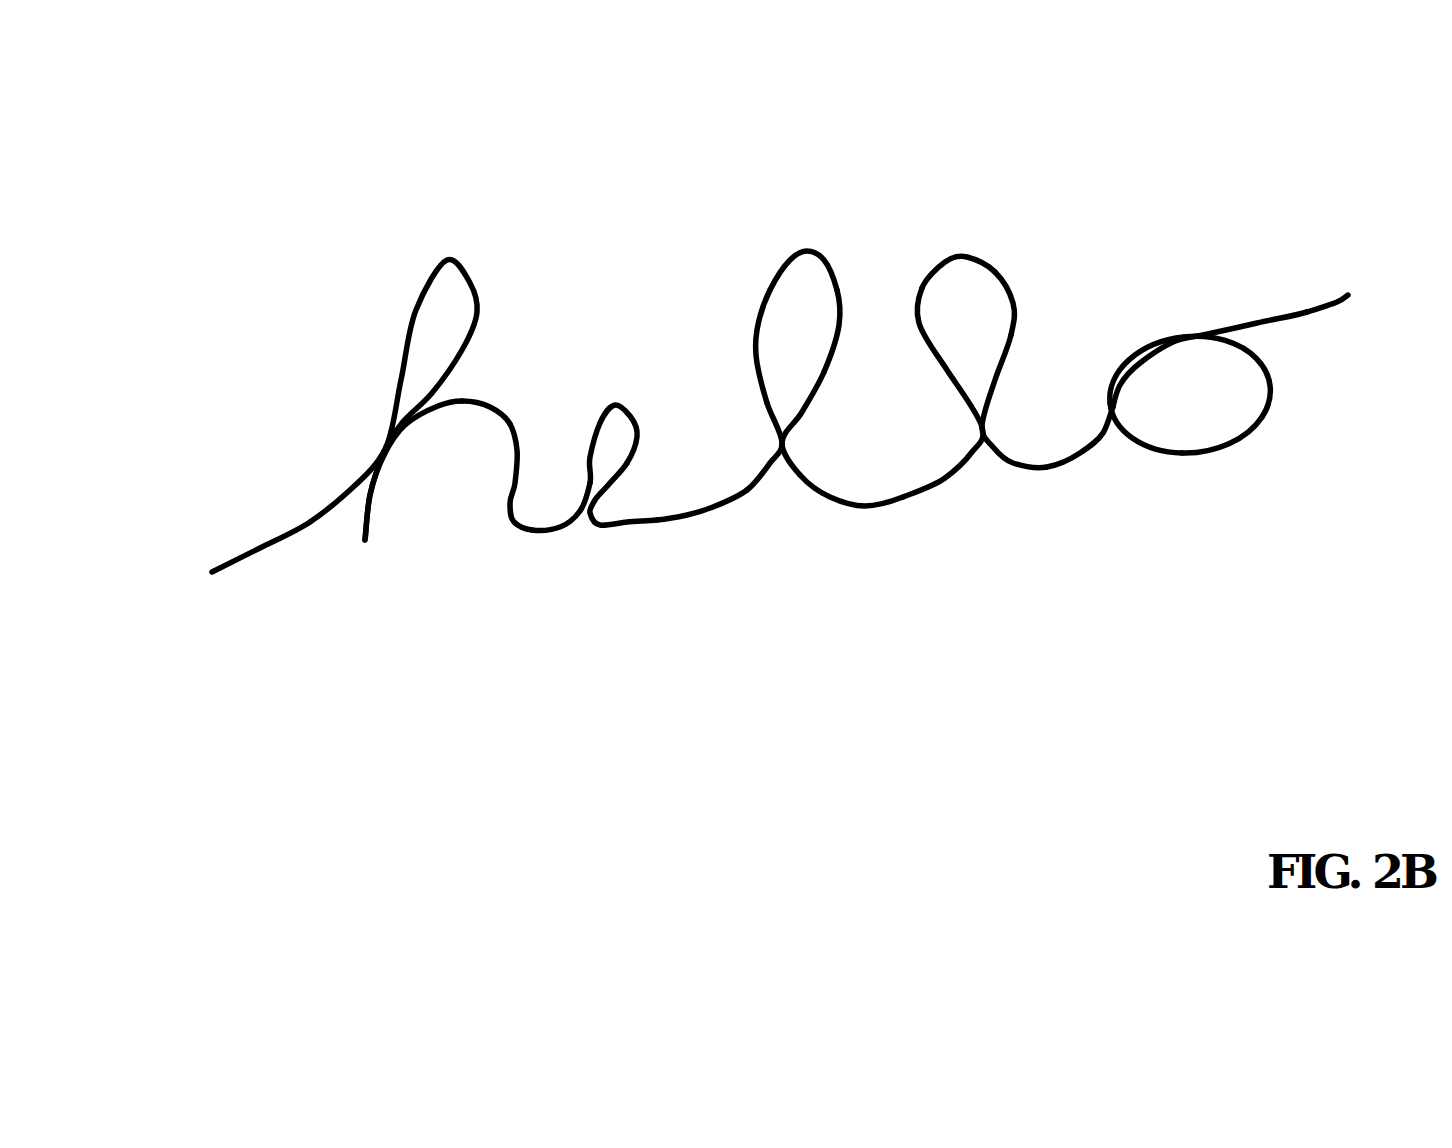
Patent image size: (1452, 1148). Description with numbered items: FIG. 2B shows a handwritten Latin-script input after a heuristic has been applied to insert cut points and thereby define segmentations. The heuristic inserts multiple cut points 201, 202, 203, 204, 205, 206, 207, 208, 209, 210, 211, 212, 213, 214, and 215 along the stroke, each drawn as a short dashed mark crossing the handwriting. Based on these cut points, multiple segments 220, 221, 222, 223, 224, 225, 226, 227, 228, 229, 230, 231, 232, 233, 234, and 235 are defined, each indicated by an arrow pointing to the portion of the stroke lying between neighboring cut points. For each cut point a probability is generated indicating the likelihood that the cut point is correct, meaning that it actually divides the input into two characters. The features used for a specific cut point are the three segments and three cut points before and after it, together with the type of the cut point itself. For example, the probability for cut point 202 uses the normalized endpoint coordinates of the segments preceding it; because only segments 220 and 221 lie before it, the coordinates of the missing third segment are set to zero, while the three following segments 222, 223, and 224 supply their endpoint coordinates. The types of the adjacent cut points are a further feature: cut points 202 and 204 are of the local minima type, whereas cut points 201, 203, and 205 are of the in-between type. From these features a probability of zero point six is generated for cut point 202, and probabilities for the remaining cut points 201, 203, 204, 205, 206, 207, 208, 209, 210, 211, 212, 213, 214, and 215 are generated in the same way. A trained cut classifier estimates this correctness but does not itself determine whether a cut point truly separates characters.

The cut point 201 is at (317, 542).
The cut point 202 is at (366, 557).
The cut point 203 is at (472, 420).
The cut point 204 is at (546, 484).
The cut point 205 is at (615, 414).
The cut point 206 is at (686, 484).
The cut point 207 is at (783, 291).
The cut point 208 is at (783, 350).
The cut point 209 is at (884, 465).
The cut point 210 is at (960, 289).
The cut point 211 is at (963, 330).
The cut point 212 is at (1065, 433).
The cut point 213 is at (1184, 387).
The cut point 214 is at (1203, 435).
The cut point 215 is at (1265, 290).
The segment 220 is at (253, 553).
The segment 221 is at (400, 328).
The segment 222 is at (423, 430).
The segment 223 is at (521, 430).
The segment 224 is at (591, 514).
The segment 225 is at (641, 516).
The segment 226 is at (757, 496).
The segment 227 is at (805, 248).
The segment 228 is at (817, 491).
The segment 229 is at (953, 496).
The segment 230 is at (970, 252).
The segment 231 is at (1007, 362).
The segment 232 is at (1098, 466).
The segment 233 is at (1160, 460).
The segment 234 is at (1264, 410).
The segment 235 is at (1320, 306).